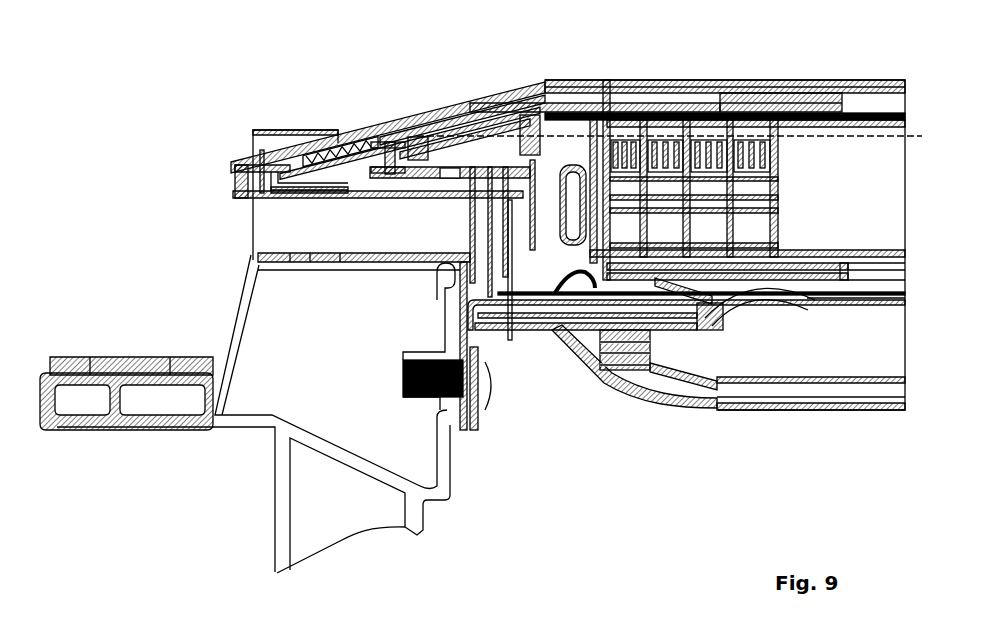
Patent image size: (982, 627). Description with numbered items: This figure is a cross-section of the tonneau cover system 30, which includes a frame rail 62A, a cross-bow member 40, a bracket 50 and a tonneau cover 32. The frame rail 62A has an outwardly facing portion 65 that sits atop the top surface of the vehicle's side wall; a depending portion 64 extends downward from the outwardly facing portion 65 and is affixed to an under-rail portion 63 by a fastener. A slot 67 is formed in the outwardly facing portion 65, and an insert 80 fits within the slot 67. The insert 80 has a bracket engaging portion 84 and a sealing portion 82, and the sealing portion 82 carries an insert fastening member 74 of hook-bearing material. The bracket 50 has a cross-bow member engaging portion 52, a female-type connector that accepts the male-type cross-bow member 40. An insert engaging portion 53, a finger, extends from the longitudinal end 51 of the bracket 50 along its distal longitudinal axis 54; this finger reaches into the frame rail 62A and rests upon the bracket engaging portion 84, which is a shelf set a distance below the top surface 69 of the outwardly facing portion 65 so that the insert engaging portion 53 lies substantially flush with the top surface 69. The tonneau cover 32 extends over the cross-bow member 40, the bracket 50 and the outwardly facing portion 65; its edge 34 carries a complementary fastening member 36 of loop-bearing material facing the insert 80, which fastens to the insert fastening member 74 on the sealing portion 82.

The tonneau cover system 30 is at (205, 48).
The tonneau cover 32 is at (764, 80).
The edge 34 is at (366, 122).
The complementary fastening member 36 is at (417, 142).
The cross-bow member 40 is at (872, 180).
The bracket 50 is at (740, 282).
The longitudinal end 51 is at (560, 205).
The cross-bow member engaging portion 52 is at (778, 115).
The insert engaging portion 53 is at (503, 90).
The distal longitudinal axis 54 is at (686, 135).
The frame rail 62A is at (205, 226).
The under-rail portion 63 is at (237, 320).
The depending portion 64 is at (478, 230).
The outwardly facing portion 65 is at (456, 195).
The slot 67 is at (355, 160).
The top surface 69 is at (460, 106).
The insert fastening member 74 is at (280, 143).
The insert 80 is at (352, 148).
The sealing portion 82 is at (338, 150).
The bracket engaging portion 84 is at (437, 186).